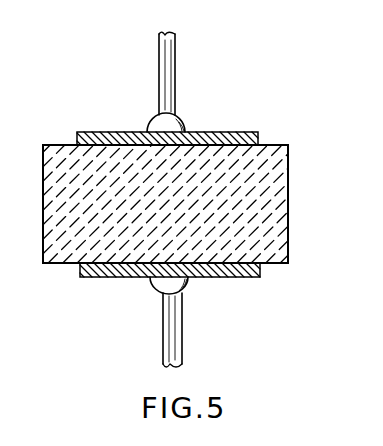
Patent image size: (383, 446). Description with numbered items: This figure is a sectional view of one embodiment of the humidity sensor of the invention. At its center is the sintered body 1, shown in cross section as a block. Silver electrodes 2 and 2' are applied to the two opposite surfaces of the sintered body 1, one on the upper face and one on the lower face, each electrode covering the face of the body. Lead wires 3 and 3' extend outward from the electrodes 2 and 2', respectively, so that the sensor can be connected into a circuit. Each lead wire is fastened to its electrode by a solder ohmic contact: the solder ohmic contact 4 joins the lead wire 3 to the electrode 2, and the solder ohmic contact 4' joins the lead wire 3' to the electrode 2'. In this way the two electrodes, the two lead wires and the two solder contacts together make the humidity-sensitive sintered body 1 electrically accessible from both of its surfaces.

The sintered body 1 is at (265, 205).
The silver electrode 2 is at (187, 125).
The silver electrode 2' is at (187, 282).
The lead wire 3 is at (187, 73).
The lead wire 3' is at (192, 330).
The solder ohmic contact 4 is at (186, 114).
The solder ohmic contact 4' is at (188, 295).